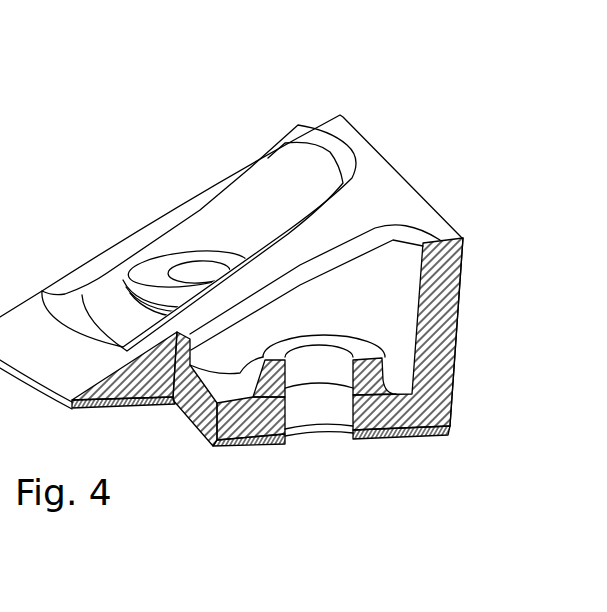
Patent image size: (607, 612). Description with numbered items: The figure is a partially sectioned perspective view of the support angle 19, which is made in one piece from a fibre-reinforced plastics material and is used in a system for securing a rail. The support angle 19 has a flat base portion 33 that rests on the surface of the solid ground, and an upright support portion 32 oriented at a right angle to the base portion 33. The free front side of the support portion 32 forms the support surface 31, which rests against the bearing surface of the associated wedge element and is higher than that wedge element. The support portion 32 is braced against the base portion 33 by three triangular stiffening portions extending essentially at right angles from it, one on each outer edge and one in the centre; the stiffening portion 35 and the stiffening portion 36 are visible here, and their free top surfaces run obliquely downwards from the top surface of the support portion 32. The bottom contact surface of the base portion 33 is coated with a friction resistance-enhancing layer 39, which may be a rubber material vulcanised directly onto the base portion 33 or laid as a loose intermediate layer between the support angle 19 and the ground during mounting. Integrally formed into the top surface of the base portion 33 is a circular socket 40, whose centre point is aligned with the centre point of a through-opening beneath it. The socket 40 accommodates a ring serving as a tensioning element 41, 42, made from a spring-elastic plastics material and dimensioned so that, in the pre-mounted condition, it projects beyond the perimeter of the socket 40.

The support angle 19 is at (211, 152).
The support surface 31 is at (464, 322).
The support portion 32 is at (443, 233).
The base portion 33 is at (250, 423).
The stiffening portion 35 is at (302, 255).
The stiffening portion 36 is at (167, 220).
The friction resistance-enhancing layer 39 is at (403, 439).
The socket 40 is at (391, 389).
The tensioning element 41 is at (158, 271).
The tensioning element 42 is at (316, 368).